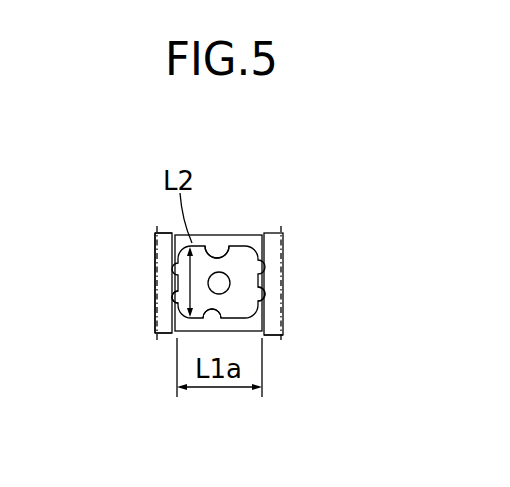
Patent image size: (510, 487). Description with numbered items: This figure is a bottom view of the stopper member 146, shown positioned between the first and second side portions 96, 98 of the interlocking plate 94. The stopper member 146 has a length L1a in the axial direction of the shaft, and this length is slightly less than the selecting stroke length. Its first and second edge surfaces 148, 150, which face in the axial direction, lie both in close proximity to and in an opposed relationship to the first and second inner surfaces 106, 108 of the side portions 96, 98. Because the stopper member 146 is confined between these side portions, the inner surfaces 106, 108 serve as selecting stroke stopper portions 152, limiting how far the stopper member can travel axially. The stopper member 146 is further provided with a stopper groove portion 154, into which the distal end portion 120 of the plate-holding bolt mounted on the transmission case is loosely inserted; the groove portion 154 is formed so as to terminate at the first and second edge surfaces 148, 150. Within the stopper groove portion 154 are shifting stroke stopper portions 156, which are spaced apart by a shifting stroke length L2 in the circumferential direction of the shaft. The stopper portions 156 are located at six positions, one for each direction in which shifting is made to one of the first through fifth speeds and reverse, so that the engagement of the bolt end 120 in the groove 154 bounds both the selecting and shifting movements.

The interlocking plate 94 is at (155, 229).
The first side portion 96 is at (283, 240).
The second side portion 98 is at (157, 242).
The first inner surface 106 is at (264, 293).
The second inner surface 108 is at (174, 297).
The distal end portion 120 is at (221, 282).
The stopper member 146 is at (320, 203).
The first edge surface 148 is at (285, 328).
The second edge surface 150 is at (160, 326).
The selecting stroke stopper portions 152 is at (155, 267).
The stopper groove portion 154 is at (232, 305).
The shifting stroke stopper portions 156 is at (218, 247).